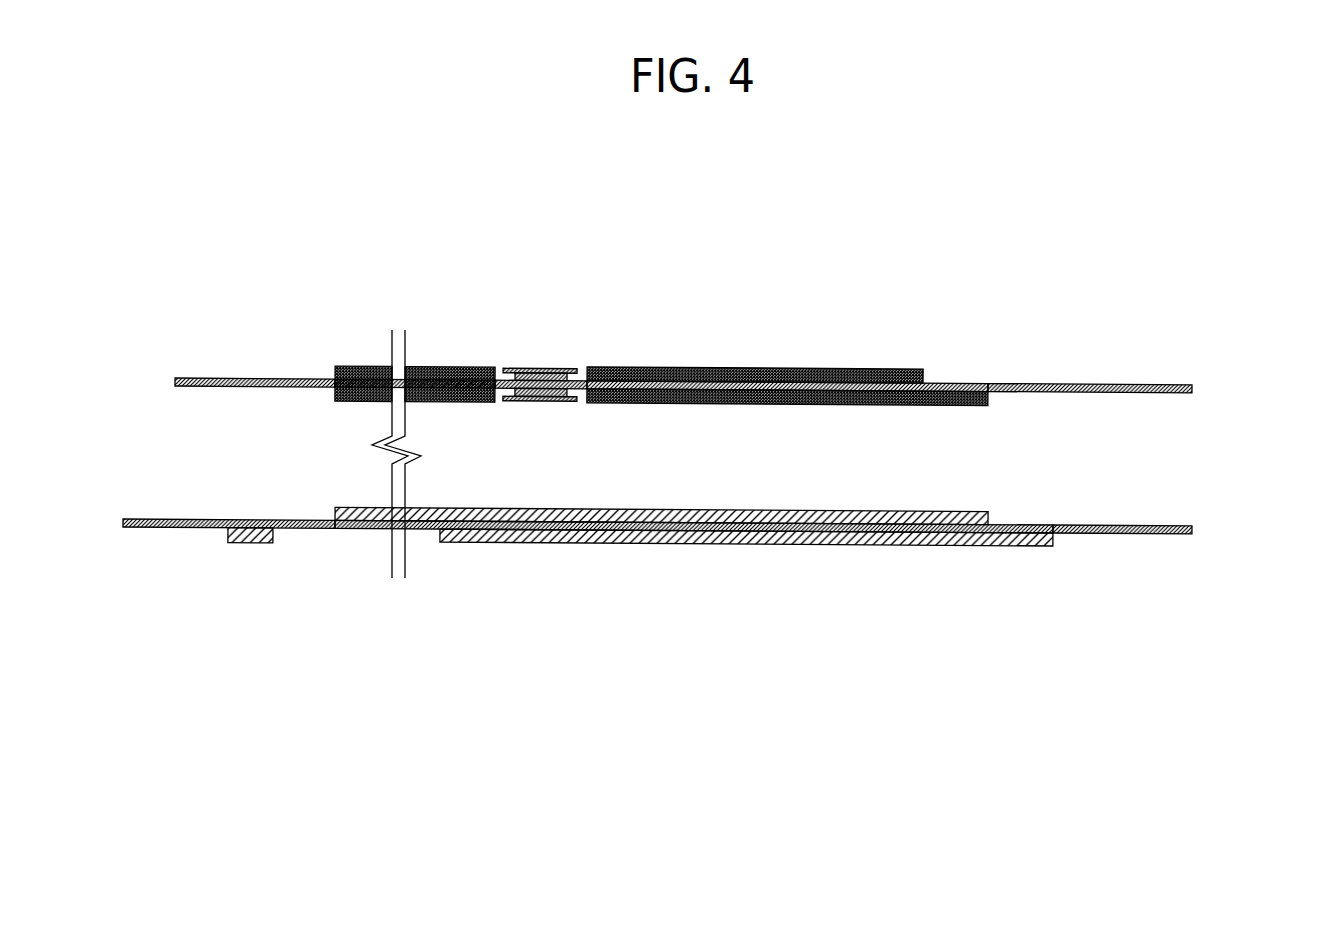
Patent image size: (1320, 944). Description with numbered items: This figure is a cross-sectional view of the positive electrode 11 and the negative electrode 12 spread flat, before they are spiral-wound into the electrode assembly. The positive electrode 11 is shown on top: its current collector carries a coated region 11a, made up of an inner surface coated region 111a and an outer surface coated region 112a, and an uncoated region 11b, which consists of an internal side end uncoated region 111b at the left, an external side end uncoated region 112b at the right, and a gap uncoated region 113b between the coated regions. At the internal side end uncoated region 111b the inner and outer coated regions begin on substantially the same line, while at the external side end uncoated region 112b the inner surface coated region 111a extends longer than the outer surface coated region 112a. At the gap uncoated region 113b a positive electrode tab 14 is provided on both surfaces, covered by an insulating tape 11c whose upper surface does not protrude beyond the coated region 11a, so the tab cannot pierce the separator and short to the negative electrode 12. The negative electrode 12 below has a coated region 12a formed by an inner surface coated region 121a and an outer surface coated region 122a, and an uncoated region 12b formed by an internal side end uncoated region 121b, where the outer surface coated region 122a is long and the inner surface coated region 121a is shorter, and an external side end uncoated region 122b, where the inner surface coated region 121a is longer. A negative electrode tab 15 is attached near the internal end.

The positive electrode 11 is at (1200, 389).
The coated region 11a is at (843, 305).
The uncoated region 11b is at (577, 737).
The insulating tape 11c is at (551, 368).
The negative electrode 12 is at (1200, 531).
The coated region 12a is at (808, 610).
The uncoated region 12b is at (931, 732).
The positive electrode tab 14 is at (528, 367).
The negative electrode tab 15 is at (248, 544).
The inner surface coated region 111a is at (820, 397).
The internal side end uncoated region 111b is at (236, 378).
The outer surface coated region 112a is at (757, 369).
The external side end uncoated region 112b is at (1077, 385).
The gap uncoated region 113b is at (585, 371).
The inner surface coated region 121a is at (725, 546).
The internal side end uncoated region 121b is at (173, 528).
The outer surface coated region 122a is at (786, 546).
The external side end uncoated region 122b is at (1128, 535).